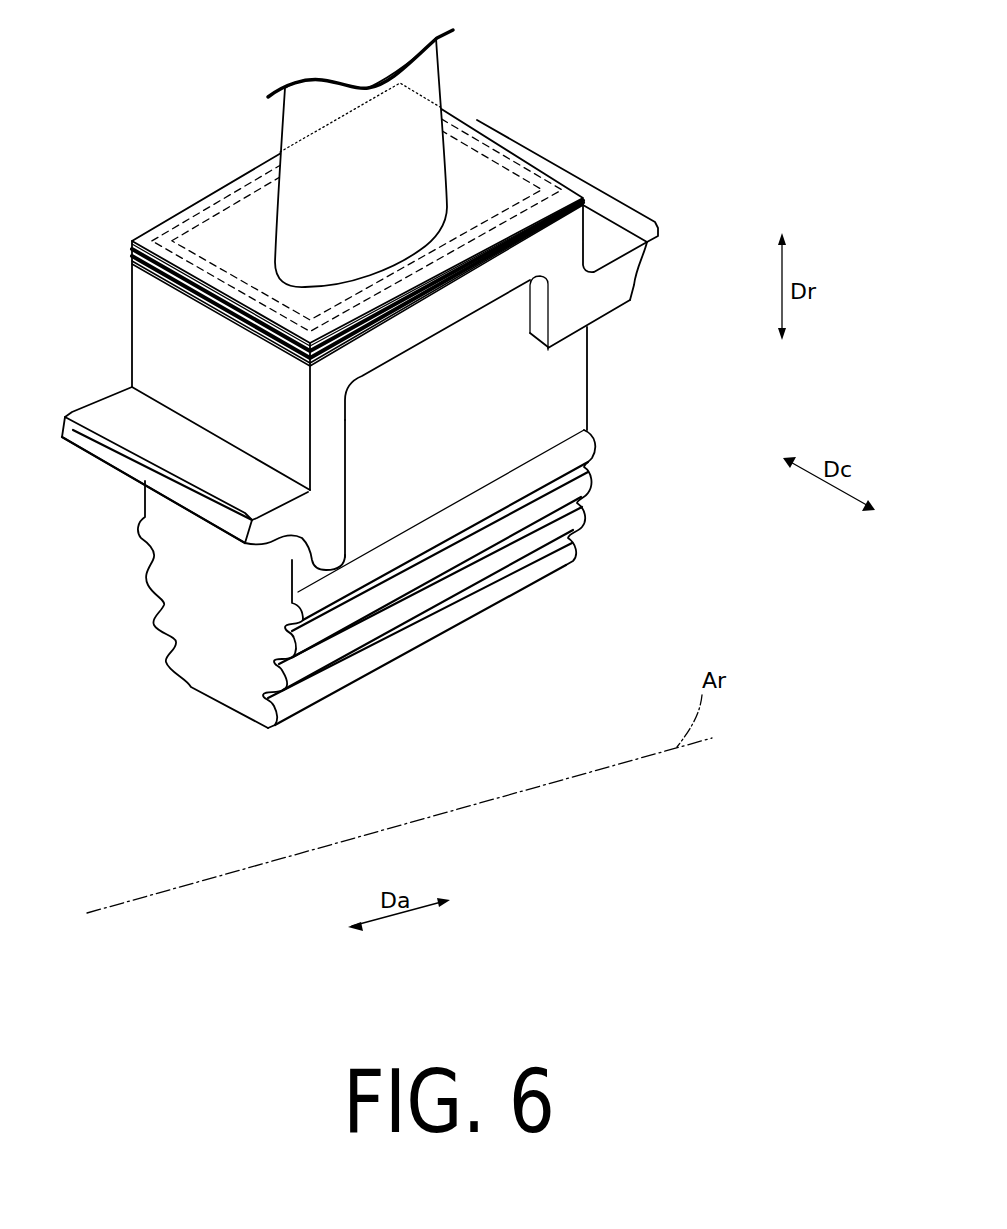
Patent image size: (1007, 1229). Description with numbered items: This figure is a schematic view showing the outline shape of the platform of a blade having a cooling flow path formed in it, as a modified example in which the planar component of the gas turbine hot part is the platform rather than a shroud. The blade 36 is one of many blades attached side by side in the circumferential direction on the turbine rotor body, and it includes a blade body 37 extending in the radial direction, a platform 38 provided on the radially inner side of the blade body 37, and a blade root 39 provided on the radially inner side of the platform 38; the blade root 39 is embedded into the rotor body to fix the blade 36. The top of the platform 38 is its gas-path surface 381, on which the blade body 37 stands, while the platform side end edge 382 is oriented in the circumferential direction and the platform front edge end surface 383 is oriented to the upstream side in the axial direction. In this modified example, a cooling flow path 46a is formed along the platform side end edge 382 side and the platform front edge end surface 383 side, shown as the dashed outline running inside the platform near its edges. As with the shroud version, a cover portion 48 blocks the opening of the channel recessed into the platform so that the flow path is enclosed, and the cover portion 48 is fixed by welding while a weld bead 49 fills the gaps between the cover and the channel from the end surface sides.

The blade 36 is at (268, 66).
The blade body 37 is at (420, 77).
The platform 38 is at (557, 268).
The platform top surface (gas path surface) 381 is at (500, 167).
The platform side end edge 382 is at (132, 317).
The platform front edge end surface 383 is at (155, 330).
The blade root 39 is at (553, 390).
The cooling flow path 46a is at (227, 195).
The cover portion 48 is at (132, 253).
The weld bead 49 is at (583, 197).